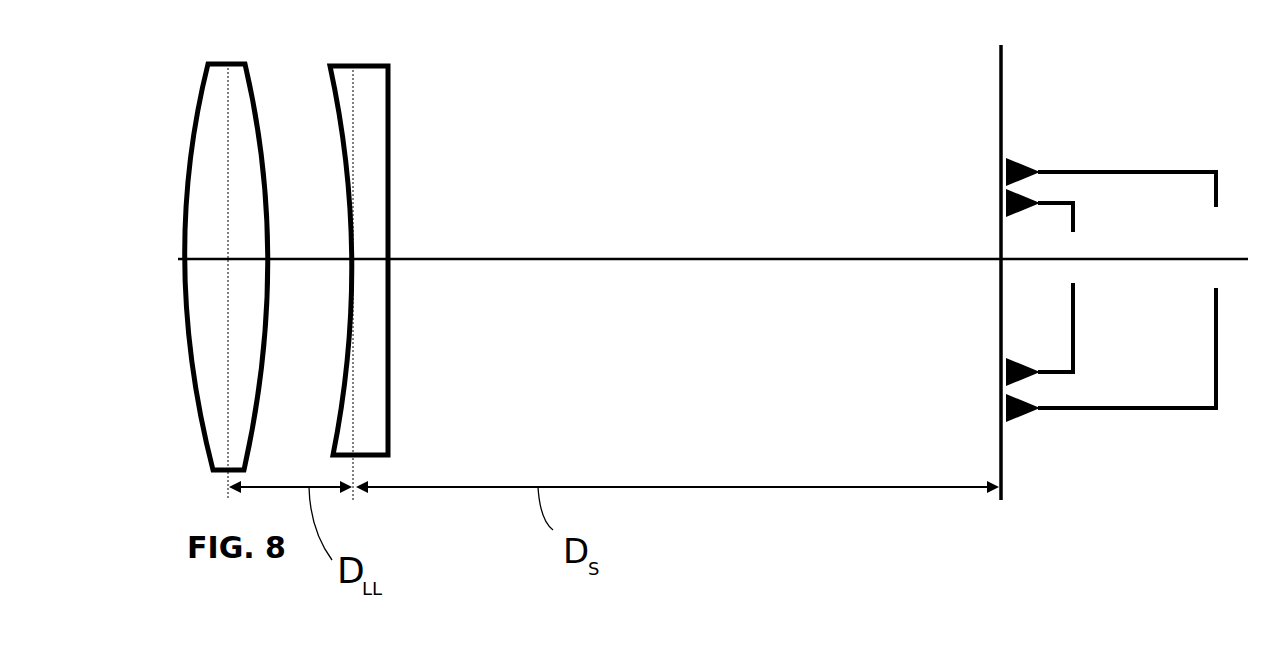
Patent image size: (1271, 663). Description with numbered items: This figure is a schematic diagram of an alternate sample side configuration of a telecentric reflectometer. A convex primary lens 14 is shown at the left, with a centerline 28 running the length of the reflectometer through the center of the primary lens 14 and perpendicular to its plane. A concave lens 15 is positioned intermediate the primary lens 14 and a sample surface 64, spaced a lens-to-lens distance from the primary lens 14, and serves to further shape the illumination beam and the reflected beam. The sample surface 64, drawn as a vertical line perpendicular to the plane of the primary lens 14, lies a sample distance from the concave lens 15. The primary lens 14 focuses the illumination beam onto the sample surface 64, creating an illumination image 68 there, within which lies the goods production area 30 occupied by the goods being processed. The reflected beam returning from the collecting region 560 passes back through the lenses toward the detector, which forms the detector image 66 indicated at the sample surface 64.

The primary lens 14 is at (255, 78).
The concave lens 15 is at (391, 88).
The centerline 28 is at (568, 258).
The goods production area 30 is at (952, 238).
The sample surface 64 is at (1003, 113).
The detector image 66 is at (1077, 330).
The illumination image 68 is at (1180, 412).
The collecting region 560 is at (962, 300).